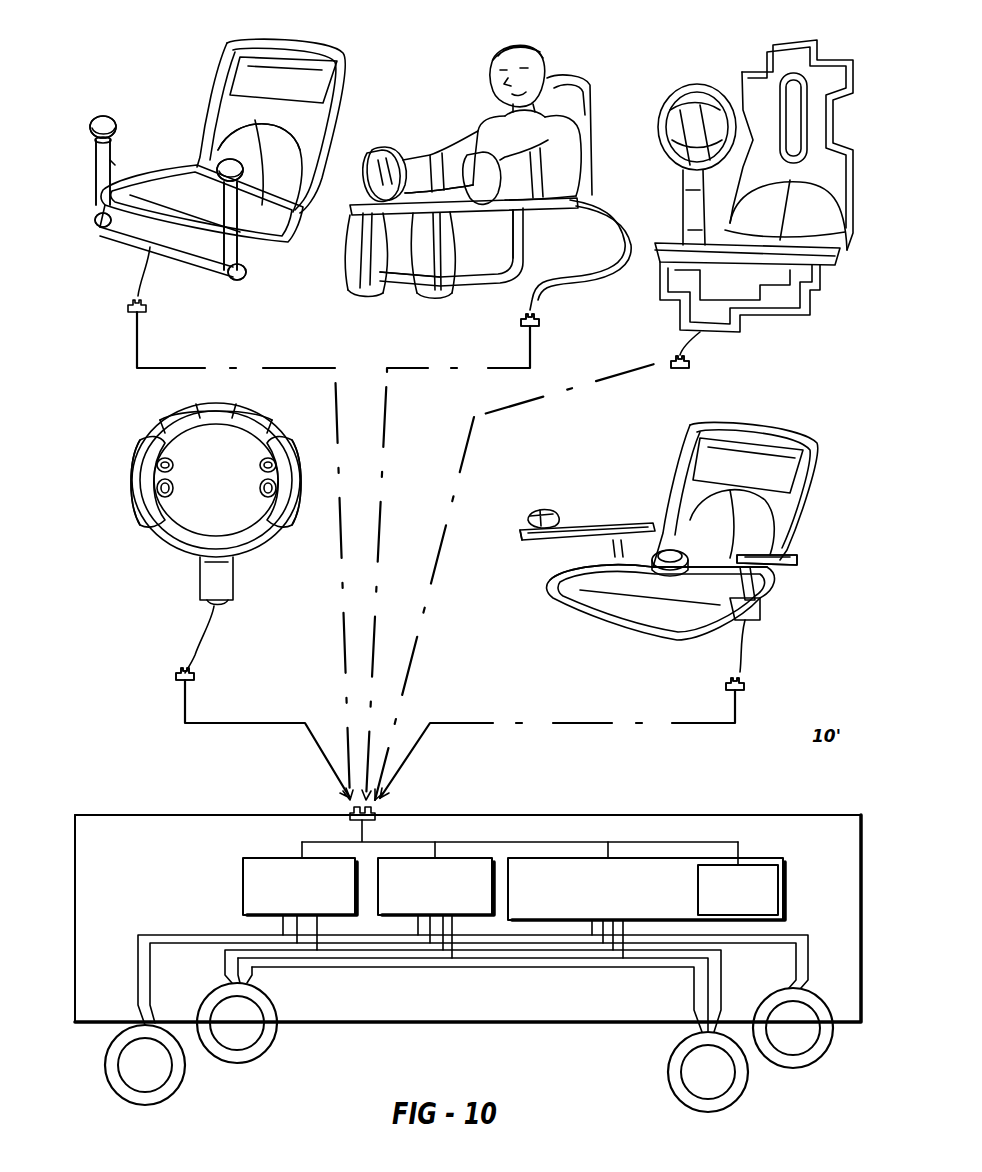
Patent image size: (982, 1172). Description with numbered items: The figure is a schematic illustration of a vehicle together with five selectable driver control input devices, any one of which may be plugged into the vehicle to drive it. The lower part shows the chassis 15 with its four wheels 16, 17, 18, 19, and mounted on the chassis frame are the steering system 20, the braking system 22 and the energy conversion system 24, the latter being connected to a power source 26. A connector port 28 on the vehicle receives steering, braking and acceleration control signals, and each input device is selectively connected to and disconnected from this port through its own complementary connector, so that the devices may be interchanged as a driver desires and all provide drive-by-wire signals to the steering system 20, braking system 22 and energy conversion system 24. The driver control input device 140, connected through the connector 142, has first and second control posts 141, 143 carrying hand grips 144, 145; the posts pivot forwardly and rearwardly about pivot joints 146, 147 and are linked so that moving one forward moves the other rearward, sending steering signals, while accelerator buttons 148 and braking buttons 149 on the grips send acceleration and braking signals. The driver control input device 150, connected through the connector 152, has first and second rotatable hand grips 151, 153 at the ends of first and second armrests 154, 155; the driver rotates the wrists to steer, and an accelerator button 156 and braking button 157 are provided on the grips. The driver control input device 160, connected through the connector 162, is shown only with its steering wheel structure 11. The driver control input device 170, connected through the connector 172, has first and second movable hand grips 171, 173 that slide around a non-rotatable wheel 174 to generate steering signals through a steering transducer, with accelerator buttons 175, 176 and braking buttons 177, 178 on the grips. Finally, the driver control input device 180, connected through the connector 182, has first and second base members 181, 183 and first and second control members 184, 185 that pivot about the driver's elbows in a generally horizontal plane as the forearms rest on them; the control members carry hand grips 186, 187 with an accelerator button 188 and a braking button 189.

The steering wheel structure 11 is at (657, 93).
The chassis 15 is at (757, 815).
The wheel 16 is at (107, 1062).
The wheel 17 is at (260, 1055).
The wheel 18 is at (667, 1069).
The wheel 19 is at (826, 1062).
The steering system 20 is at (243, 888).
The braking system 22 is at (471, 857).
The energy conversion system 24 is at (640, 857).
The power source 26 is at (722, 864).
The connector port 28 is at (348, 815).
The driver control input device 140 is at (171, 69).
The first control post 141 is at (114, 163).
The complementary connector 142 is at (128, 303).
The second control post 143 is at (240, 241).
The hand grip 144 is at (114, 145).
The hand grip 145 is at (235, 160).
The pivot joint 146 is at (110, 225).
The pivot joint 147 is at (241, 280).
The accelerator button 148 is at (100, 115).
The braking button 149 is at (113, 120).
The driver control input device 150 is at (437, 89).
The first rotatable hand grip 151 is at (393, 140).
The complementary connector 152 is at (520, 318).
The second rotatable hand grip 153 is at (470, 225).
The first armrest 154 is at (435, 200).
The second armrest 155 is at (516, 226).
The accelerator button 156 is at (372, 160).
The braking button 157 is at (473, 150).
The driver control input device 160 is at (720, 67).
The complementary connector 162 is at (690, 365).
The driver control input device 170 is at (140, 423).
The first movable hand grip 171 is at (140, 513).
The complementary connector 172 is at (175, 674).
The second movable hand grip 173 is at (293, 505).
The non-rotatable wheel 174 is at (203, 403).
The accelerator button 175 is at (157, 467).
The accelerator button 176 is at (272, 458).
The braking button 177 is at (166, 492).
The braking button 178 is at (268, 494).
The driver control input device 180 is at (797, 543).
The first base member 181 is at (638, 525).
The complementary connector 182 is at (746, 684).
The second base member 183 is at (780, 558).
The first control member 184 is at (578, 525).
The second control member 185 is at (695, 563).
The hand grip 186 is at (543, 513).
The hand grip 187 is at (666, 570).
The accelerator button 188 is at (528, 532).
The braking button 189 is at (660, 560).